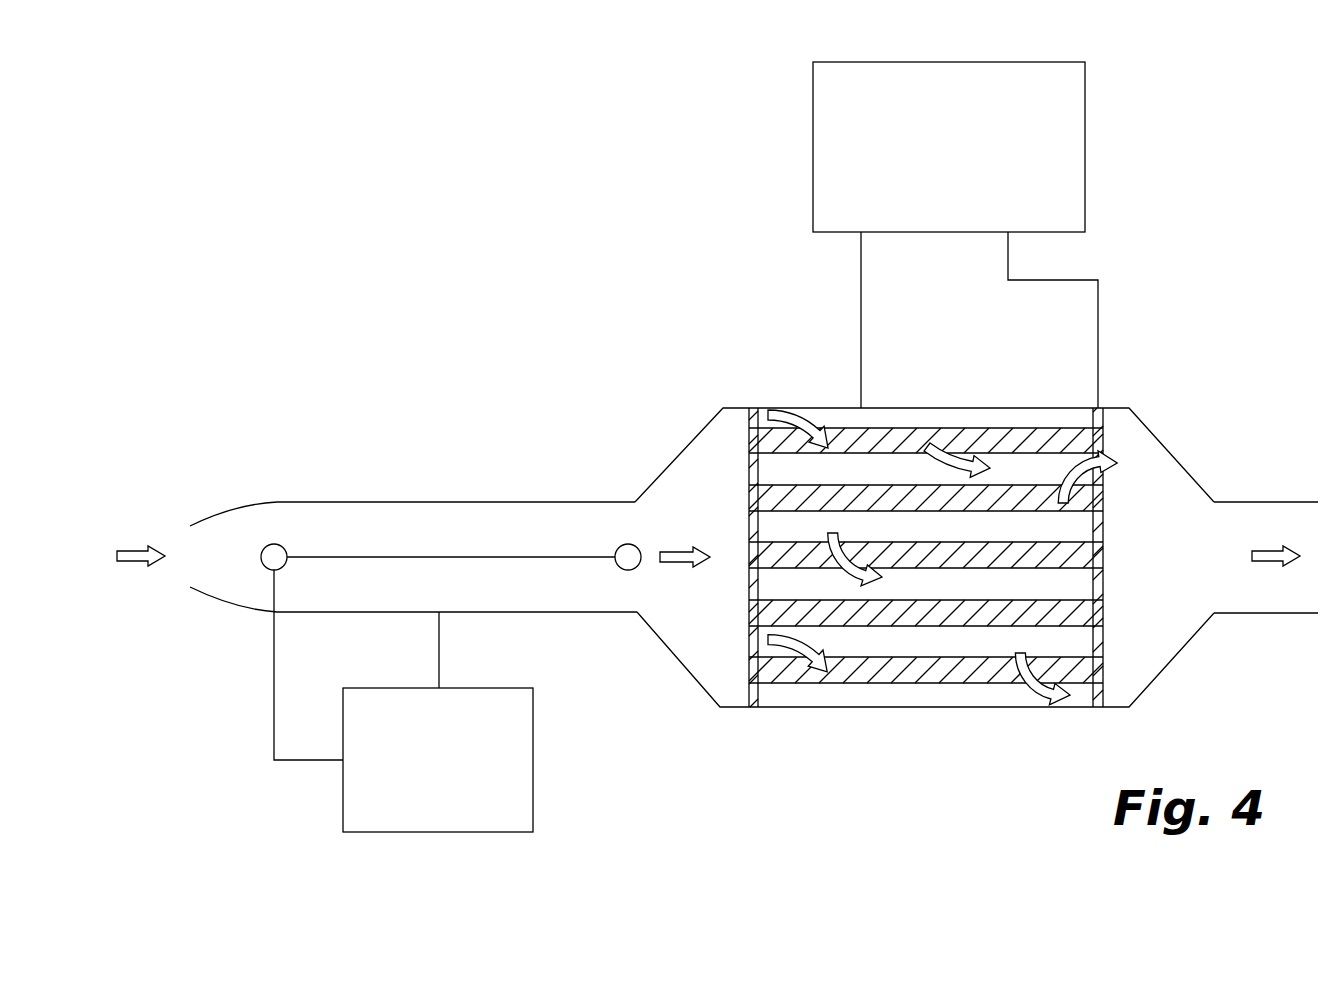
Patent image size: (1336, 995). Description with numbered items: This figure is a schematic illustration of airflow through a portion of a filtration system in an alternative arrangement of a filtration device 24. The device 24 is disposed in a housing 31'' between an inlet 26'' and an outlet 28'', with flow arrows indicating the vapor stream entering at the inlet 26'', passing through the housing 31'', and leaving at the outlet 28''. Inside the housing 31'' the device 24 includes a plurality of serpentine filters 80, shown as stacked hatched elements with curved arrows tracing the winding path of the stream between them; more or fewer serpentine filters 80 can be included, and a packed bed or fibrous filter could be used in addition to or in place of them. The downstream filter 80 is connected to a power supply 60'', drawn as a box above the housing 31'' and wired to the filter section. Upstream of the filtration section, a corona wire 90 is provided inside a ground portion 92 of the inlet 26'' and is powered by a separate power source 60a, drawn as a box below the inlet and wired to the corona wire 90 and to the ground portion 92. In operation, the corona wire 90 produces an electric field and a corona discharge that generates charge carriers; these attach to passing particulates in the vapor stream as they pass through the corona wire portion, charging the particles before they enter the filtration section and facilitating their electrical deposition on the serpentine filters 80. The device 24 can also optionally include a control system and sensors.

The filtration device 24 is at (281, 186).
The inlet 26'' is at (411, 534).
The outlet 28'' is at (1270, 525).
The housing 31'' is at (913, 548).
The power supply 60'' is at (991, 235).
The power source 60a is at (533, 783).
The serpentine filters 80 is at (878, 436).
The corona wire 90 is at (281, 545).
The ground portion 92 is at (543, 612).